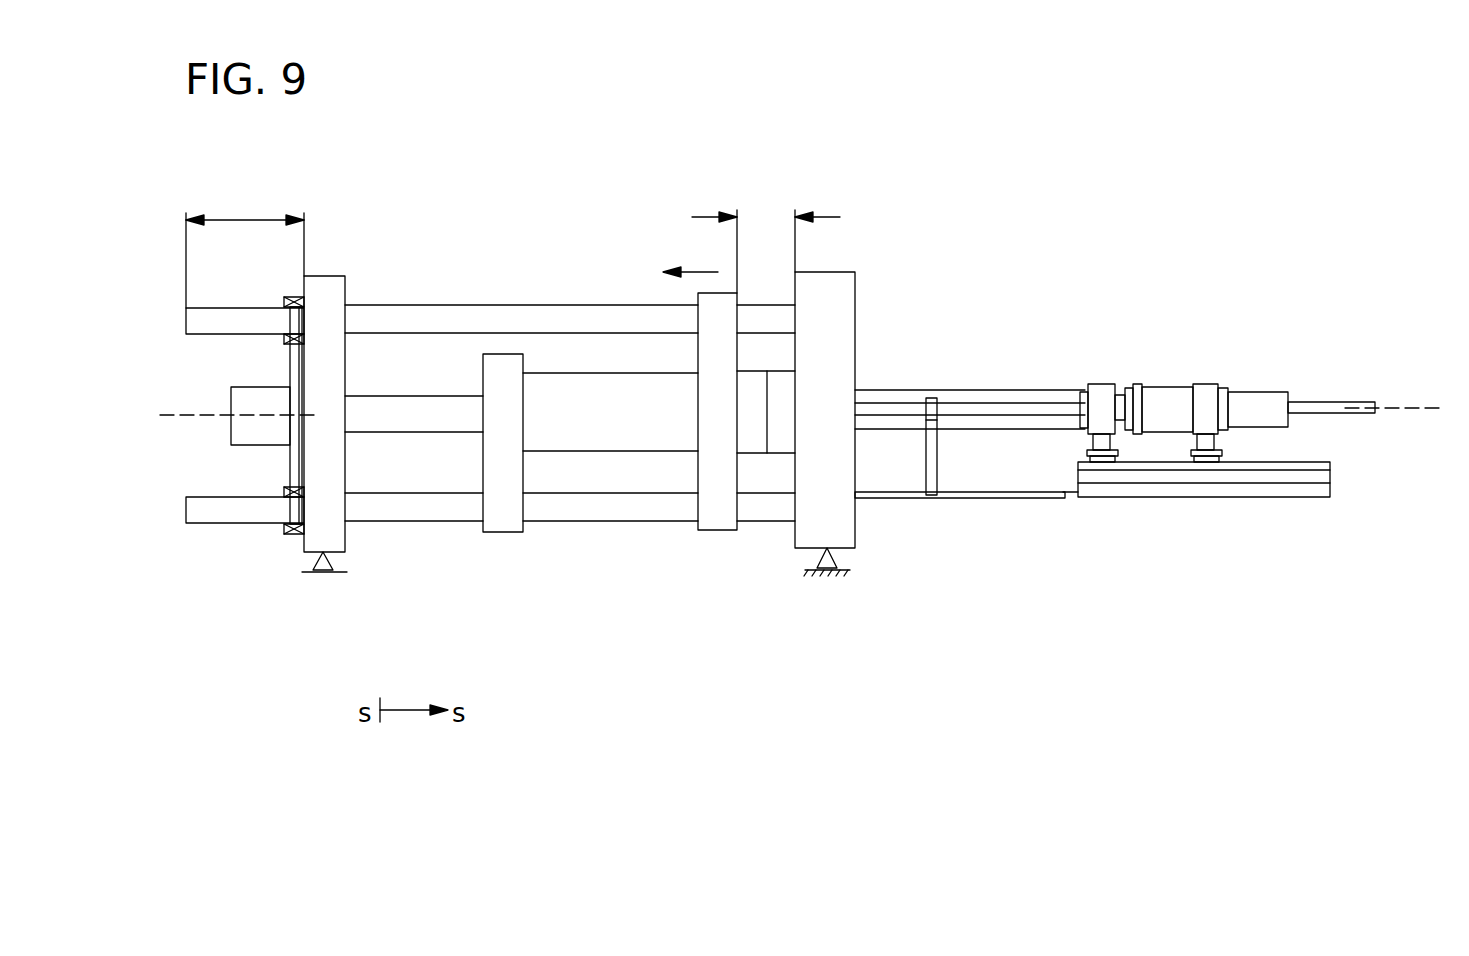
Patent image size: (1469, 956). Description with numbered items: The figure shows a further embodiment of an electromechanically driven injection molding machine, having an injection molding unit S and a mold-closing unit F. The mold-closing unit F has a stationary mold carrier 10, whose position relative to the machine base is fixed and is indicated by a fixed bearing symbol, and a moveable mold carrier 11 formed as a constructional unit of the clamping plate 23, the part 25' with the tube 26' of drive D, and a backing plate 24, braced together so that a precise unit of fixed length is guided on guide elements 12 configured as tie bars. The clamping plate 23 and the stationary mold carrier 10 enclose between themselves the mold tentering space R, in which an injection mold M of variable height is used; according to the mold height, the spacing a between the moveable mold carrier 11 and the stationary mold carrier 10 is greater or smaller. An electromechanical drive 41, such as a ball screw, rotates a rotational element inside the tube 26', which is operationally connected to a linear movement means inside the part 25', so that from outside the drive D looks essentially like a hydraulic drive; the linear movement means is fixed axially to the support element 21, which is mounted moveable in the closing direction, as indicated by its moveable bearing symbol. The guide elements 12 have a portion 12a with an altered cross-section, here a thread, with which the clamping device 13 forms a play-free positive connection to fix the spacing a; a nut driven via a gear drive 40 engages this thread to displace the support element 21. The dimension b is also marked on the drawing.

The stationary mold carrier 10 is at (838, 384).
The moveable mold carrier 11 is at (640, 375).
The guide elements 12 is at (570, 420).
The portion of the guide element 12a is at (207, 460).
The clamping device 13 is at (292, 428).
The support element 21 is at (236, 424).
The clamping plate 23 is at (698, 470).
The backing plate 24 is at (471, 500).
The part 25' is at (610, 412).
The tube 26' is at (414, 312).
The gear drive 40 is at (211, 415).
The electromechanical drive 41 is at (205, 430).
The mold tentering space R is at (777, 491).
The injection mold M is at (1077, 401).
The drive D is at (407, 430).
The mold-closing unit F is at (502, 288).
The injection molding unit S is at (1072, 338).
The spacing a is at (766, 241).
The distance b is at (245, 249).